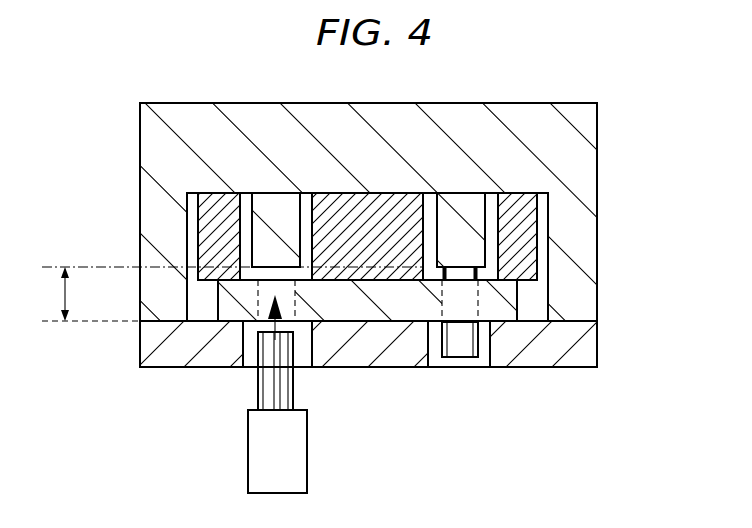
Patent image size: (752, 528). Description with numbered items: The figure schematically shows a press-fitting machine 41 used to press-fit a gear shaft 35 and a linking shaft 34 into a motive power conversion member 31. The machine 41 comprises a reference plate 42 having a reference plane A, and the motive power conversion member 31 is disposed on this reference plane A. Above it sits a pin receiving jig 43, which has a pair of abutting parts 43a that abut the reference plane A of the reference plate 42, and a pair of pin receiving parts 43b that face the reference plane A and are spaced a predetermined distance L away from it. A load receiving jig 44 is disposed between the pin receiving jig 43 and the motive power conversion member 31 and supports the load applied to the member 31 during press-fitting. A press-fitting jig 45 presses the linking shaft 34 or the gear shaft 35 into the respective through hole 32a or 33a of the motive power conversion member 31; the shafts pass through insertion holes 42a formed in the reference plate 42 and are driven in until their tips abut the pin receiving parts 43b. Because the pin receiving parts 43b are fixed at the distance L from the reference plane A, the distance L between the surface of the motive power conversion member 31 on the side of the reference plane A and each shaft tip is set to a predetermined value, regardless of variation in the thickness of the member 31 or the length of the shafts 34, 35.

The press-fitting machine 41 is at (606, 121).
The reference plate 42 is at (600, 348).
The insertion hole 42a is at (243, 330).
The pin receiving jig 43 is at (604, 194).
The abutting part 43a is at (162, 298).
The pin receiving part 43b is at (273, 210).
The load receiving jig 44 is at (385, 192).
The motive power conversion member 31 is at (401, 326).
The through hole 32a is at (295, 284).
The through hole 33a is at (480, 286).
The linking shaft 34 is at (270, 385).
The gear shaft 35 is at (458, 343).
The press-fitting jig 45 is at (293, 458).
The reference plane A is at (568, 318).
The distance L is at (226, 294).